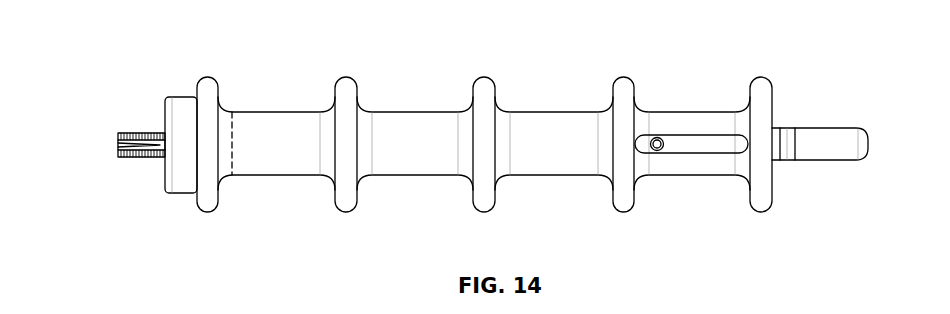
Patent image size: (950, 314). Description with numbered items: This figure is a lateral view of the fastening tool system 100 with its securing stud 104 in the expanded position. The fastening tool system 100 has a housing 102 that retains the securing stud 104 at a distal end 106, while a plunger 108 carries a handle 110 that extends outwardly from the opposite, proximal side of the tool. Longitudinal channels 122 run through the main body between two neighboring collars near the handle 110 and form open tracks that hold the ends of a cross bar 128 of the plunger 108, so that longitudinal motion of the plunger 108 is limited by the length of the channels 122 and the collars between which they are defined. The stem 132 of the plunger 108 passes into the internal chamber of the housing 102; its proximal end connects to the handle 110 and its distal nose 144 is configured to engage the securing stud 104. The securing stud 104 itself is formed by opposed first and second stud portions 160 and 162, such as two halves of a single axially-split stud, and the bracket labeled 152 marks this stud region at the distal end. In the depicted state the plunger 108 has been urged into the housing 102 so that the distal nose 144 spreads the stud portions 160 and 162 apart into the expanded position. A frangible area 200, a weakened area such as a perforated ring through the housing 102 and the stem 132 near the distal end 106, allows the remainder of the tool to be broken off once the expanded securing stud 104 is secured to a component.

The fastening tool system 100 is at (784, 34).
The housing 102 is at (553, 112).
The securing stud 104 is at (118, 128).
The distal end 106 is at (178, 97).
The plunger 108 is at (835, 153).
The handle 110 is at (850, 128).
The longitudinal channels 122 is at (703, 145).
The cross bar 128 is at (655, 138).
The stem 132 is at (163, 137).
The distal nose 144 is at (123, 153).
The screw portion 152 is at (124, 139).
The first stud portion 160 is at (130, 130).
The second stud portion 162 is at (137, 158).
The frangible area 200 is at (232, 130).